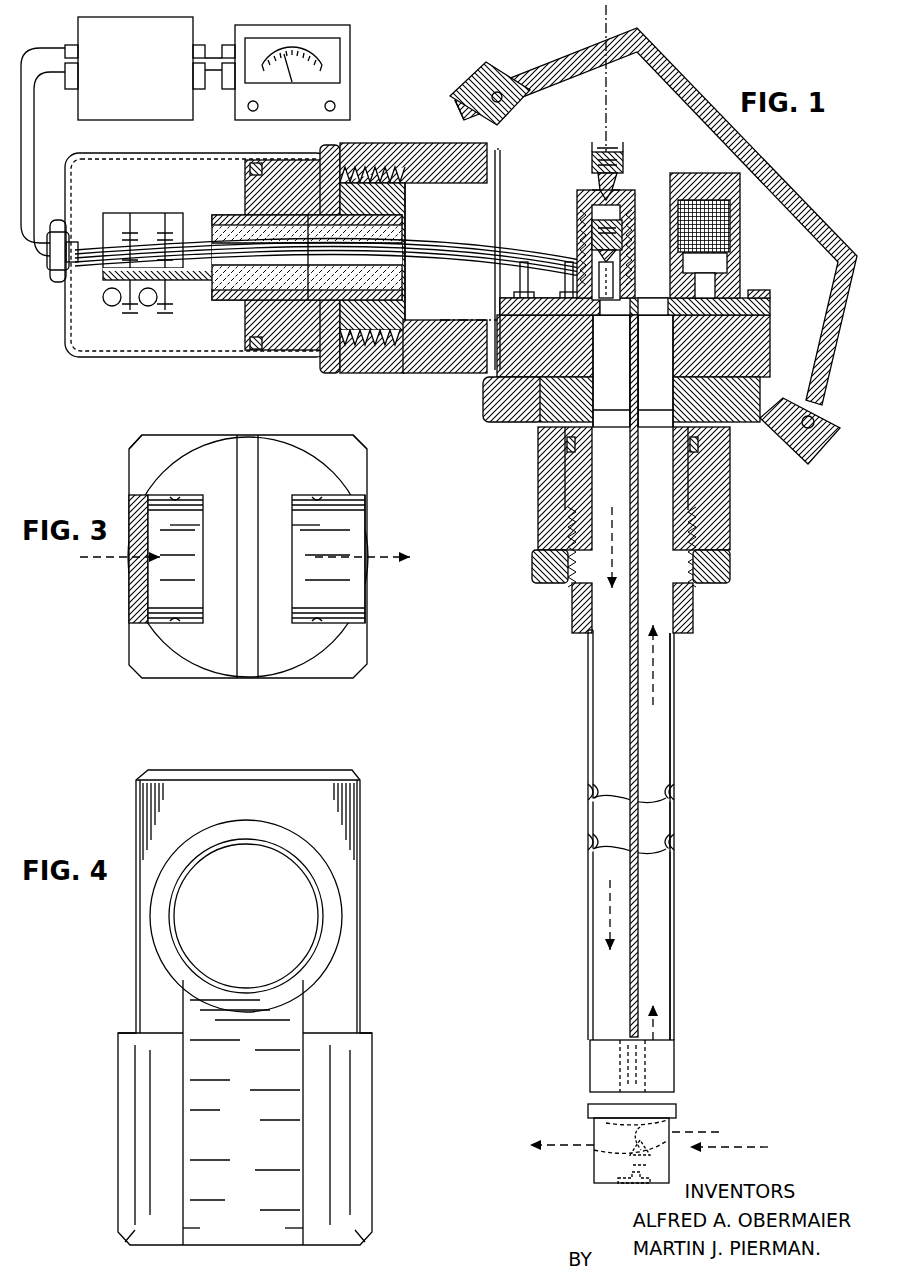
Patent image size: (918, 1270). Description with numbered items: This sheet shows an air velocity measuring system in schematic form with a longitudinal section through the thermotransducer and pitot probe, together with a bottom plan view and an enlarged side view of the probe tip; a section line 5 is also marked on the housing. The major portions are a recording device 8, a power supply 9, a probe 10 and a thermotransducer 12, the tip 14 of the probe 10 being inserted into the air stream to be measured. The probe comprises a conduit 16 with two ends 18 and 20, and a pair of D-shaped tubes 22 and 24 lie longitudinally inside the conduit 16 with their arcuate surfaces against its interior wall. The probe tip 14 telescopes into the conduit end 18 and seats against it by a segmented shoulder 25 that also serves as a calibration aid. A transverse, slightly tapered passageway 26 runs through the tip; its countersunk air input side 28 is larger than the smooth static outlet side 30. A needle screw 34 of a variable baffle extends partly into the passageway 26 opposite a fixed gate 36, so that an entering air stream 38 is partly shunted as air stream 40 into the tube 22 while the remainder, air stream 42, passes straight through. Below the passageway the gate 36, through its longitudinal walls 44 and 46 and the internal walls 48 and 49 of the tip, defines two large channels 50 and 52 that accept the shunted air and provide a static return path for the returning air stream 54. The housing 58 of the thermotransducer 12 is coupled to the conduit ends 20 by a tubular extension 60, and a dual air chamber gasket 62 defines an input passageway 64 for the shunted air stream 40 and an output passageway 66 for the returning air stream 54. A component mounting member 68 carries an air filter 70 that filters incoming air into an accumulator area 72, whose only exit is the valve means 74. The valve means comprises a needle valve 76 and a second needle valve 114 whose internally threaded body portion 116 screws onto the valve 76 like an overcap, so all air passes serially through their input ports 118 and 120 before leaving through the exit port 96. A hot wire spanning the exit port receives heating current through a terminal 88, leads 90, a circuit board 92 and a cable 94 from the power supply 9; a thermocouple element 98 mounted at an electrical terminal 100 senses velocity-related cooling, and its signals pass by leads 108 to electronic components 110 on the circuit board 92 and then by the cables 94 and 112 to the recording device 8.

In FIG. 1, the section line 5- 5 is at (607, 22).
In FIG. 1, the recording device 8 is at (300, 120).
In FIG. 1, the power supply 9 is at (124, 120).
In FIG. 1, the probe 10 is at (708, 660).
In FIG. 1, the thermotransducer 12 is at (466, 80).
In FIG. 1, the probe tip 14 is at (596, 1168).
In FIG. 3, the probe tip 14 is at (122, 480).
In FIG. 4, the probe tip 14 is at (378, 806).
In FIG. 1, the conduit 16 is at (588, 806).
In FIG. 1, the conduit end 18 is at (668, 1118).
In FIG. 1, the conduit end 20 is at (712, 440).
In FIG. 1, the tube 22 is at (670, 800).
In FIG. 1, the tube 24 is at (630, 800).
In FIG. 3, the segmented shoulder 25 is at (150, 455).
In FIG. 4, the segmented shoulder 25 is at (125, 1043).
In FIG. 1, the passageway 26 is at (600, 1133).
In FIG. 3, the air input side 28 is at (129, 592).
In FIG. 4, the air input side 28 is at (216, 838).
In FIG. 3, the static outlet side 30 is at (365, 600).
In FIG. 4, the static outlet side 30 is at (272, 850).
In FIG. 1, the needle screw 34 is at (618, 1181).
In FIG. 1, the gate 36 is at (647, 1152).
In FIG. 1, the air stream 38 is at (736, 1147).
In FIG. 3, the air stream 38 is at (96, 560).
In FIG. 1, the shunted air stream 40 is at (655, 832).
In FIG. 1, the air stream 42 is at (541, 1149).
In FIG. 3, the air stream 42 is at (394, 560).
In FIG. 3, the longitudinal wall 44 is at (200, 525).
In FIG. 3, the longitudinal wall 46 is at (296, 532).
In FIG. 3, the internal wall 48 is at (175, 498).
In FIG. 4, the internal wall 48 is at (185, 1226).
In FIG. 3, the internal wall 49 is at (318, 498).
In FIG. 4, the internal wall 49 is at (300, 1226).
In FIG. 3, the channel 50 is at (175, 559).
In FIG. 4, the channel 50 is at (243, 1112).
In FIG. 3, the channel 52 is at (328, 559).
In FIG. 1, the returning air stream 54 is at (609, 728).
In FIG. 1, the housing 58 is at (795, 190).
In FIG. 1, the tubular extension 60 is at (487, 378).
In FIG. 1, the dual air chamber gasket 62 is at (735, 334).
In FIG. 1, the input passageway 64 is at (652, 405).
In FIG. 1, the output passageway 66 is at (616, 405).
In FIG. 1, the component mounting member 68 is at (760, 291).
In FIG. 1, the air filter 70 is at (703, 180).
In FIG. 1, the accumulator area 72 is at (572, 115).
In FIG. 1, the valve means 74 is at (566, 203).
In FIG. 1, the needle valve 76 is at (623, 178).
In FIG. 1, the terminal 88 is at (578, 266).
In FIG. 1, the leads 90 is at (462, 255).
In FIG. 1, the circuit board 92 is at (215, 283).
In FIG. 1, the cable 94 is at (48, 268).
In FIG. 1, the exit port 96 is at (616, 281).
In FIG. 1, the thermocouple element 98 is at (542, 430).
In FIG. 1, the electrical terminal 100 is at (520, 284).
In FIG. 1, the leads 108 is at (390, 252).
In FIG. 1, the electronic components 110 is at (178, 214).
In FIG. 1, the cable 112 is at (214, 72).
In FIG. 1, the needle valve 114 is at (597, 156).
In FIG. 1, the body portion 116 is at (618, 240).
In FIG. 1, the input port 118 is at (588, 178).
In FIG. 1, the input port 120 is at (592, 241).